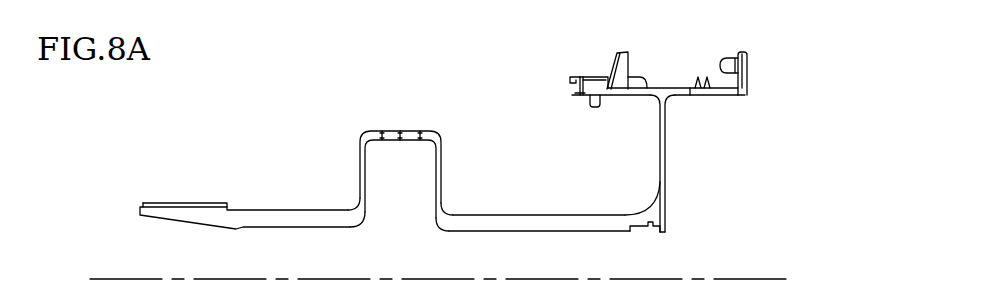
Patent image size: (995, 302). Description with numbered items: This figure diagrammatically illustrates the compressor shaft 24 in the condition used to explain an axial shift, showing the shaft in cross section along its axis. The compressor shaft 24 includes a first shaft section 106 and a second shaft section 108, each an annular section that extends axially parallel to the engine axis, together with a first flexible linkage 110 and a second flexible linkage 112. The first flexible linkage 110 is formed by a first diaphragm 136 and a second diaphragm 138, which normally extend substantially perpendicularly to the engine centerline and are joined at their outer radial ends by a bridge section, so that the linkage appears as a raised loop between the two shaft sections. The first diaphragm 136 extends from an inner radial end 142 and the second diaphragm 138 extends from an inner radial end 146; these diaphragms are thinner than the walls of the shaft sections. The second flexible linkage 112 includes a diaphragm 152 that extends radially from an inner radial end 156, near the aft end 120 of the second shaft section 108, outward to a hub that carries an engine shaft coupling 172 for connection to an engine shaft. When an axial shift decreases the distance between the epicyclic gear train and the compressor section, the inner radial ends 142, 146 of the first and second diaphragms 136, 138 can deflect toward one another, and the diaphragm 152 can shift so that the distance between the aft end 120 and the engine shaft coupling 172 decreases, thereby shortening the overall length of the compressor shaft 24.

The compressor shaft 24 is at (305, 77).
The first shaft section 106 is at (206, 202).
The second shaft section 108 is at (532, 211).
The first flexible linkage 110 is at (411, 128).
The second flexible linkage 112 is at (677, 141).
The aft end 120 is at (661, 228).
The first diaphragm 136 is at (362, 192).
The second diaphragm 138 is at (440, 192).
The inner radial end 142 is at (348, 208).
The inner radial end 146 is at (452, 208).
The diaphragm 152 is at (660, 163).
The inner radial end 156 is at (660, 182).
The engine shaft coupling 172 is at (748, 78).